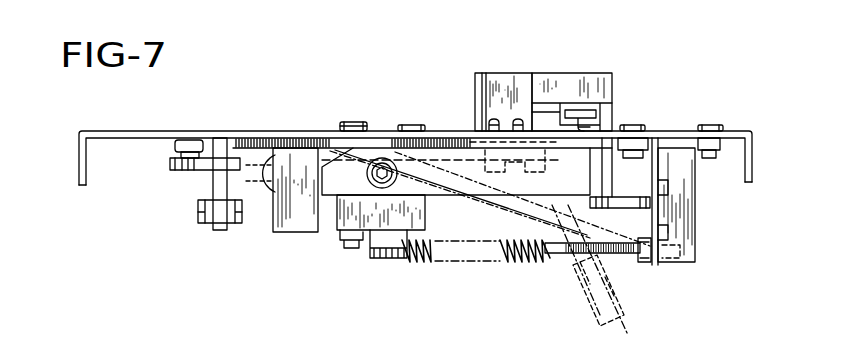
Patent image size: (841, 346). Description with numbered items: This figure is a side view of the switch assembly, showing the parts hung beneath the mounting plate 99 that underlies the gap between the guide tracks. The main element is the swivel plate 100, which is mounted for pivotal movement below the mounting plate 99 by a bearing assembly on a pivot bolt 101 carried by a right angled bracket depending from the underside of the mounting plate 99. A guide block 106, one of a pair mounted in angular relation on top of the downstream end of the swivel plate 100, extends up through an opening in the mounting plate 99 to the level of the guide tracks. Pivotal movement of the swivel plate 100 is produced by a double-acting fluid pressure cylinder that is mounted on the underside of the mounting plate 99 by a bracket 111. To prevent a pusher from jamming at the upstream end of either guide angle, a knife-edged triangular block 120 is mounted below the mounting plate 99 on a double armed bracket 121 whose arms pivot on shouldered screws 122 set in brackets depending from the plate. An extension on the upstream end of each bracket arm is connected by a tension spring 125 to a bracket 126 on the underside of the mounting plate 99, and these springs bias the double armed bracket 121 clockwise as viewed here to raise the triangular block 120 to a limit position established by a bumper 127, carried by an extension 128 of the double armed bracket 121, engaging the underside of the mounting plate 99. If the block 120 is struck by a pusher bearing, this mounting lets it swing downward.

The mounting plate 99 is at (136, 131).
The swivel plate 100 is at (200, 178).
The pivot bolt 101 is at (352, 122).
The guide block 106 is at (505, 92).
The bracket 111 is at (218, 231).
The knife-edged triangular block 120 is at (560, 92).
The double armed bracket 121 is at (432, 165).
The shouldered screws 122 is at (368, 178).
The tension spring 125 is at (510, 263).
The bracket 126 is at (660, 248).
The bumper 127 is at (640, 138).
The extension 128 is at (592, 282).